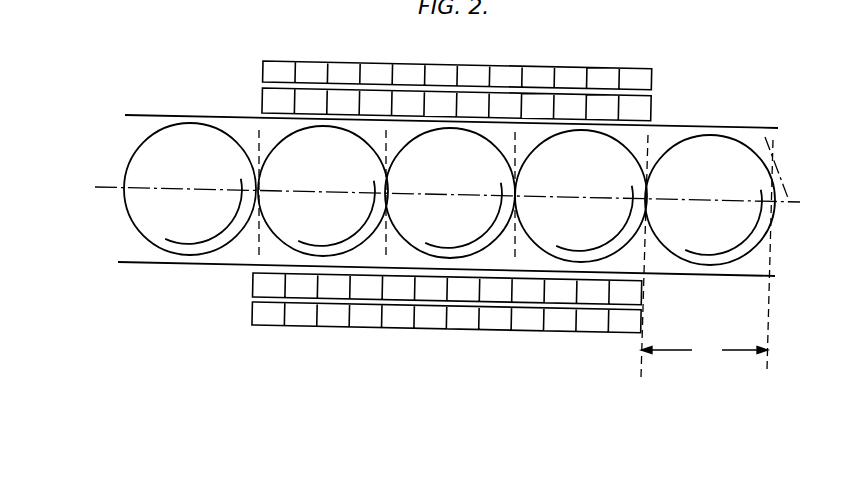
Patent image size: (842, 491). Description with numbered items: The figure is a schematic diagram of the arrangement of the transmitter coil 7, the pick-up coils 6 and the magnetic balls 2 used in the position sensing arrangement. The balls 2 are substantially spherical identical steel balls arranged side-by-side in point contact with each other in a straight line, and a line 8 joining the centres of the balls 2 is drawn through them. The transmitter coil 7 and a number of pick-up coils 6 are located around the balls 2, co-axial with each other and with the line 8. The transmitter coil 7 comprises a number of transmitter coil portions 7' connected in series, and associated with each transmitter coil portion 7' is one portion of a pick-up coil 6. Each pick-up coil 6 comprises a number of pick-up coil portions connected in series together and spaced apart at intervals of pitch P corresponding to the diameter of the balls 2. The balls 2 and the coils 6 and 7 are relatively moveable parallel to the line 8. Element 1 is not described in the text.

The conveyor 1 is at (167, 111).
The magnetic balls 2 is at (192, 233).
The pick-up coils 6 is at (653, 97).
The transmitter coil 7 is at (468, 196).
The transmitter coil portions 7' is at (307, 39).
The line joining the centres of the balls 8 is at (763, 130).
The pitch P is at (704, 350).